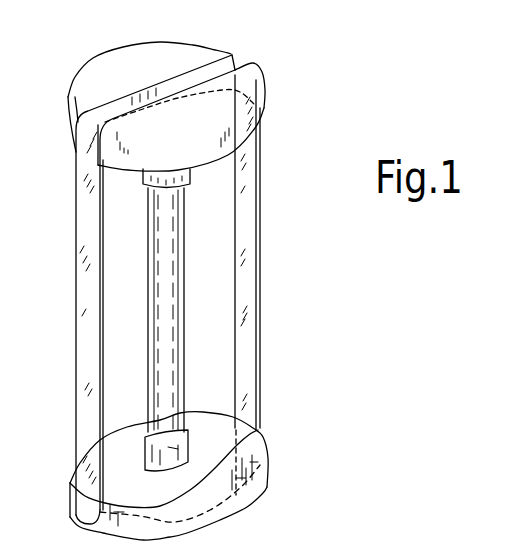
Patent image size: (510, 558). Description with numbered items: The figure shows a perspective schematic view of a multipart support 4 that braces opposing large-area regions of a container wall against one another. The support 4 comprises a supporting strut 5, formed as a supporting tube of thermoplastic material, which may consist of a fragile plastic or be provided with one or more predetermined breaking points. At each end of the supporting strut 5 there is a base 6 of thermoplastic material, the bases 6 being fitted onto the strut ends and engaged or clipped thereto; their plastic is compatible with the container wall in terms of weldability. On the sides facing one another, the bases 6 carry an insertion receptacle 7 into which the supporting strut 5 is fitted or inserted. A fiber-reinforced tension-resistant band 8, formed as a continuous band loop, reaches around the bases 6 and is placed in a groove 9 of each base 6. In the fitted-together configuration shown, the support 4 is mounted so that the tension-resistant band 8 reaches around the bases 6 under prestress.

The support 4 is at (272, 350).
The supporting strut 5 is at (173, 282).
The base 6 is at (247, 116).
The insertion receptacle 7 is at (145, 180).
The tension-resistant band 8 is at (247, 298).
The groove 9 is at (242, 53).